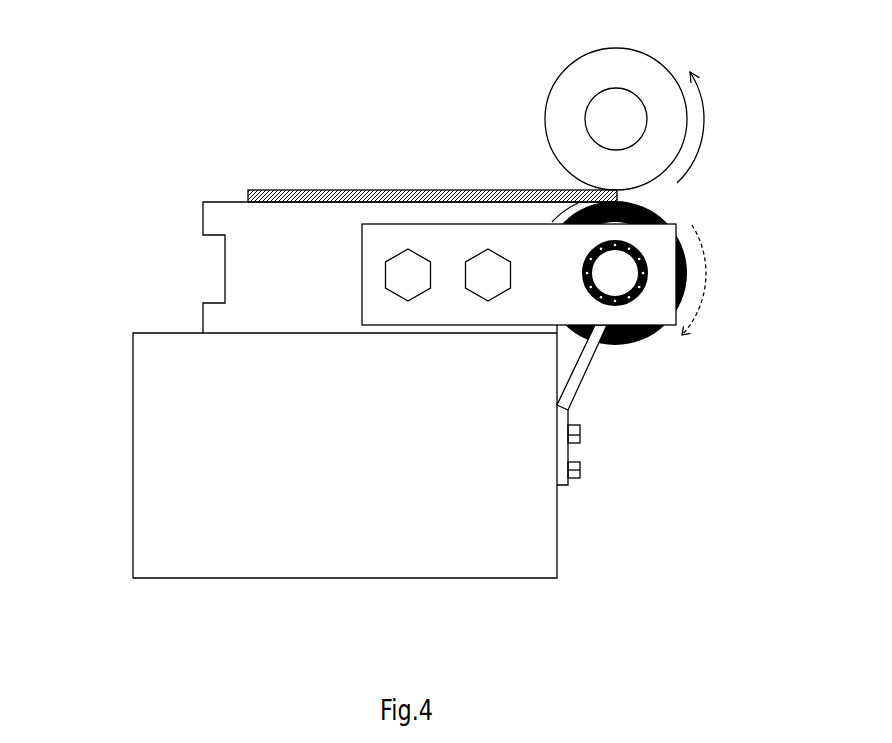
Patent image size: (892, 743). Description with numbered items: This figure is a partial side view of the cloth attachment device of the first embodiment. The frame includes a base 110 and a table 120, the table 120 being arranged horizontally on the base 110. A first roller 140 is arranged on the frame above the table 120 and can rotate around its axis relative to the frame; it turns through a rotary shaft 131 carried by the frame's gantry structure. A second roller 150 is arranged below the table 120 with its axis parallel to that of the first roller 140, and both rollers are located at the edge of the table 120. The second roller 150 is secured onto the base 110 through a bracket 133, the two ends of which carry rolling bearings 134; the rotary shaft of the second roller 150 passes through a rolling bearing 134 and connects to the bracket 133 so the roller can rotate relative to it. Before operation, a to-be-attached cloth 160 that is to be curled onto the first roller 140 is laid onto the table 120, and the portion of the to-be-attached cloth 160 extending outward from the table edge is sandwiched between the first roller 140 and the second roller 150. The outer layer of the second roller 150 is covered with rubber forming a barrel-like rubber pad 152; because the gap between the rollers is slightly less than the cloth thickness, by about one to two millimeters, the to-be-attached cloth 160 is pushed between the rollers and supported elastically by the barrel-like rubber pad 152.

The base 110 is at (419, 451).
The table 120 is at (330, 227).
The rotary shaft 131 is at (666, 77).
The bracket 133 is at (645, 291).
The rolling bearing 134 is at (678, 240).
The first roller 140 is at (558, 108).
The second roller 150 is at (651, 405).
The barrel-like rubber pad 152 is at (733, 271).
The to-be-attached cloth 160 is at (432, 150).